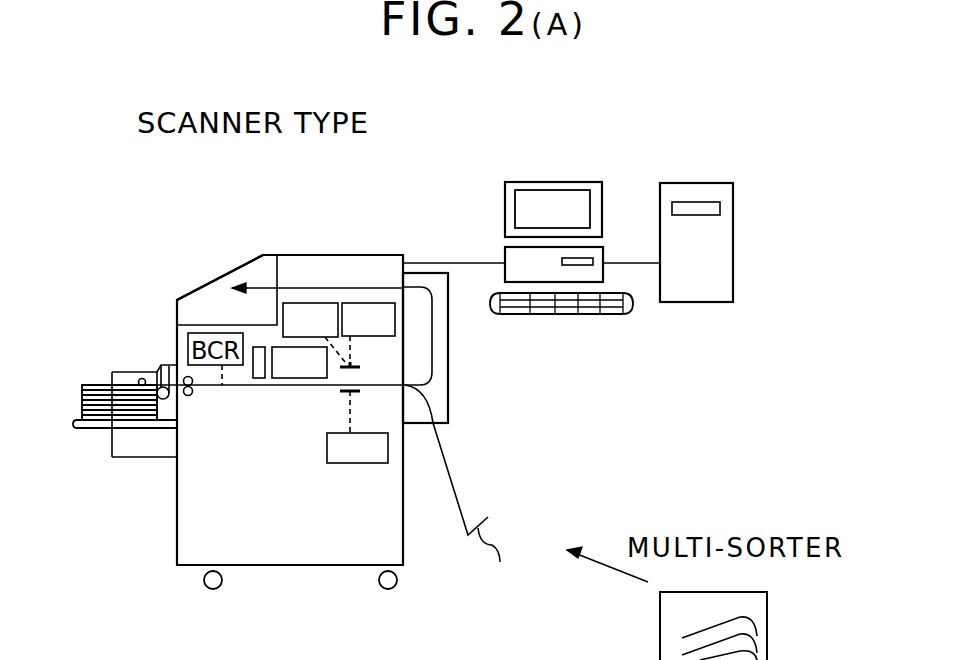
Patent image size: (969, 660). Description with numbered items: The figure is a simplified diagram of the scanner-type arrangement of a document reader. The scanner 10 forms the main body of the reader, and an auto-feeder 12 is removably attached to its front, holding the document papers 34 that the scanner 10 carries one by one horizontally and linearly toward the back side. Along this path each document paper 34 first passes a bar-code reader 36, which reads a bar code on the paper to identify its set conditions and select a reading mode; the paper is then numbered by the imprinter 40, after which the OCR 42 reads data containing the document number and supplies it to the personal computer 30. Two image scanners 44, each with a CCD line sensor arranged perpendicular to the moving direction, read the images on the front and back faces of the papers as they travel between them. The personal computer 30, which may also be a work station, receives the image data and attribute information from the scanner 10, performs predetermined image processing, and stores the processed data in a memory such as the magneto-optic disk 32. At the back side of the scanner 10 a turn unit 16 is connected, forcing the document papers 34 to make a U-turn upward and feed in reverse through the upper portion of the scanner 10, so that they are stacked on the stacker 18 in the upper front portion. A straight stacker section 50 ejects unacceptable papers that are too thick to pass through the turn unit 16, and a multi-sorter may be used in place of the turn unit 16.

The scanner 10 is at (335, 565).
The auto-feeder 12 is at (72, 405).
The turn unit 16 is at (438, 393).
The stacker 18 is at (203, 302).
The personal computer 30 is at (498, 197).
The magneto-optic disk 32 is at (733, 220).
The document papers 34 is at (98, 385).
The bar-code reader 36 is at (177, 345).
The imprinter 40 is at (290, 380).
The OCR 42 is at (320, 303).
The image scanners 44 is at (383, 337).
The straight stacker section 50 is at (480, 514).